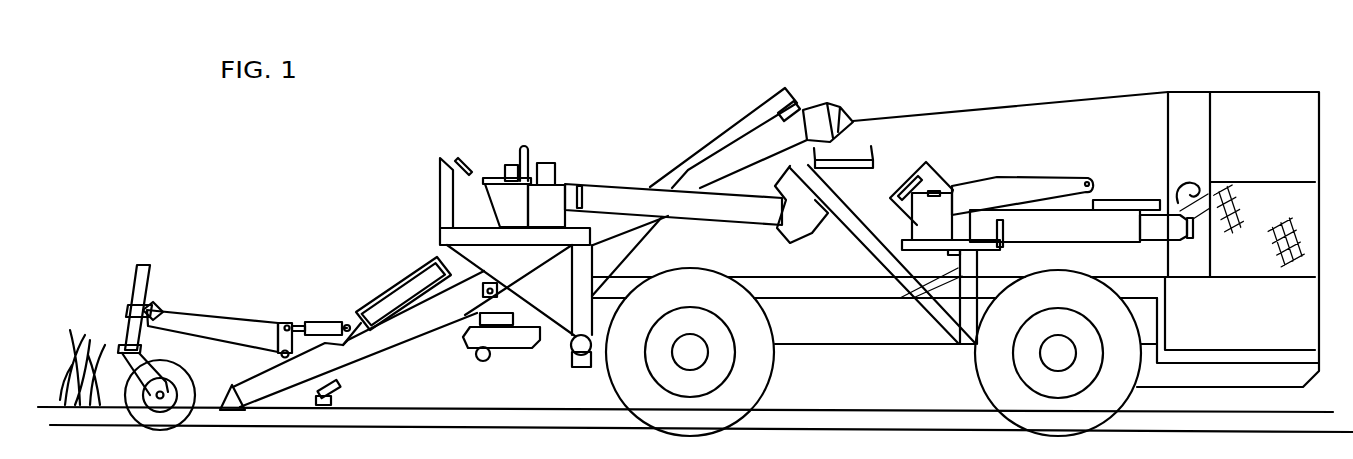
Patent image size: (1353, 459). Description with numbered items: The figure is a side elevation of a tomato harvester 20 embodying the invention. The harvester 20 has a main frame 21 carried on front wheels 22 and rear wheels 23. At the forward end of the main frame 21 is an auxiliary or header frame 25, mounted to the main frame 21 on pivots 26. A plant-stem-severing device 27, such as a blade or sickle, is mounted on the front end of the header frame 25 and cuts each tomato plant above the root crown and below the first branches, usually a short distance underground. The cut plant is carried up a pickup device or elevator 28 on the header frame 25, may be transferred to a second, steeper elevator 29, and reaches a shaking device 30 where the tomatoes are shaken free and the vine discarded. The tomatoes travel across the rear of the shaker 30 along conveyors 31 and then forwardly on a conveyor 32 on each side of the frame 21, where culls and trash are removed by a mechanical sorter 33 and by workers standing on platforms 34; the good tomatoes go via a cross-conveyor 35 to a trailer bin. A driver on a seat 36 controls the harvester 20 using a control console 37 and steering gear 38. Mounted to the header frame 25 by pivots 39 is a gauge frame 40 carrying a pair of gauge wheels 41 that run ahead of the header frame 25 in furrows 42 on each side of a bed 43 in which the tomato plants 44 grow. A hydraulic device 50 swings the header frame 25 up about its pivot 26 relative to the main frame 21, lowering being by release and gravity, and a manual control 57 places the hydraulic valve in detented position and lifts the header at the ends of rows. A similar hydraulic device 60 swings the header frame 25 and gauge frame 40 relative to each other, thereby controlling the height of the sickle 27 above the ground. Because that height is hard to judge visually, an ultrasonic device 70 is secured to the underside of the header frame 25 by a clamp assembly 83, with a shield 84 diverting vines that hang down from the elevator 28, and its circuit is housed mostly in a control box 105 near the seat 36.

The tomato harvester 20 is at (348, 248).
The main frame 21 is at (525, 232).
The front wheels 22 is at (675, 428).
The rear wheels 23 is at (1086, 432).
The header frame 25 is at (405, 363).
The pivots 26 is at (484, 292).
The plant-stem-severing device 27 is at (222, 414).
The elevator 28 is at (412, 332).
The second elevator 29 is at (708, 142).
The shaking device 30 is at (1009, 104).
The conveyors 31 is at (1255, 265).
The conveyor 32 is at (1188, 268).
The mechanical sorter 33 is at (943, 231).
The platforms 34 is at (1160, 295).
The cross-conveyor 35 is at (578, 185).
The seat 36 is at (490, 178).
The control console 37 is at (511, 175).
The steering gear 38 is at (455, 160).
The pivots 39 is at (282, 359).
The gauge frame 40 is at (205, 317).
The gauge wheels 41 is at (166, 371).
The furrows 42 is at (187, 432).
The bed 43 is at (210, 398).
The tomato plants 44 is at (96, 316).
The hydraulic device 50 is at (423, 258).
The manual control 57 is at (522, 148).
The hydraulic device 60 is at (333, 322).
The ultrasonic device 70 is at (328, 414).
The clamp assembly 83 is at (330, 386).
The shield 84 is at (340, 395).
The control box 105 is at (547, 170).